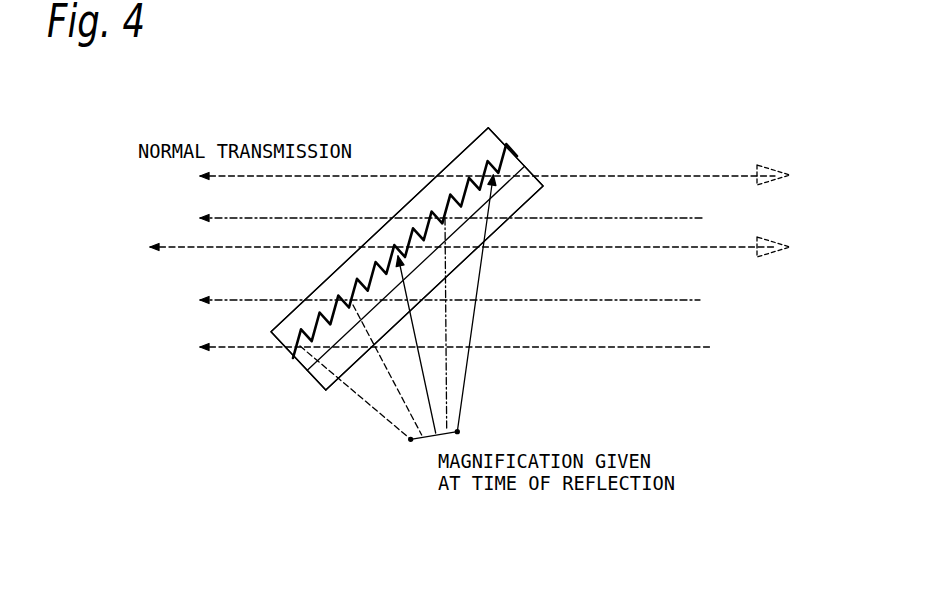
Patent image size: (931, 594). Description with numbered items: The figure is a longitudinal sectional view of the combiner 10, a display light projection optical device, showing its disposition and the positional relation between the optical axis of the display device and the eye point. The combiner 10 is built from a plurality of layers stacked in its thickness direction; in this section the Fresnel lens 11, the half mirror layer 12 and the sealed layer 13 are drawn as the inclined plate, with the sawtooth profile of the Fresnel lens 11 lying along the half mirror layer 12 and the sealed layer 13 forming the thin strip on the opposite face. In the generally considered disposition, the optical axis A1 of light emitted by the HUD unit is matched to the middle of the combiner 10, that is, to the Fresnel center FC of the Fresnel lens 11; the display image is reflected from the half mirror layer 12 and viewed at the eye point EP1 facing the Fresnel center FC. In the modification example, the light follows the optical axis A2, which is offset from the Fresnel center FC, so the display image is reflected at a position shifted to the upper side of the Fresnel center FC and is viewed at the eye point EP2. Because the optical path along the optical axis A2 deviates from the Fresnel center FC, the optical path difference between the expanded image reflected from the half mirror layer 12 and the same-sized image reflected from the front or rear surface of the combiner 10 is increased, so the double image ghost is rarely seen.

The combiner 10 is at (153, 366).
The Fresnel lens 11 is at (327, 292).
The half mirror layer 12 is at (510, 152).
The sealed layer 13 is at (530, 197).
The Fresnel center FC is at (393, 247).
The optical axis A1 is at (428, 397).
The optical axis A2 is at (468, 360).
The eye point EP1 is at (767, 257).
The eye point EP2 is at (773, 168).